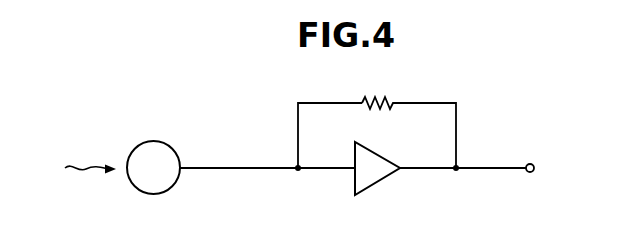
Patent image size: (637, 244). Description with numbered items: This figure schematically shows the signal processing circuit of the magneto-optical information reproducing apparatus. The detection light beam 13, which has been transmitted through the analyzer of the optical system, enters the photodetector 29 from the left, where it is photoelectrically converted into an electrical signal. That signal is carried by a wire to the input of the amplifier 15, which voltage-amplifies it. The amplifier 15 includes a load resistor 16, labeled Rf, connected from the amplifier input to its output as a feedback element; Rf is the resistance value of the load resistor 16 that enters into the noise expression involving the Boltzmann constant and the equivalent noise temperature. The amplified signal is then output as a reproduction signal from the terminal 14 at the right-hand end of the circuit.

The light beam 13 is at (86, 170).
The photodetector 29 is at (150, 194).
The amplifier 15 is at (379, 181).
The load resistor 16 is at (398, 100).
The terminal 14 is at (530, 172).